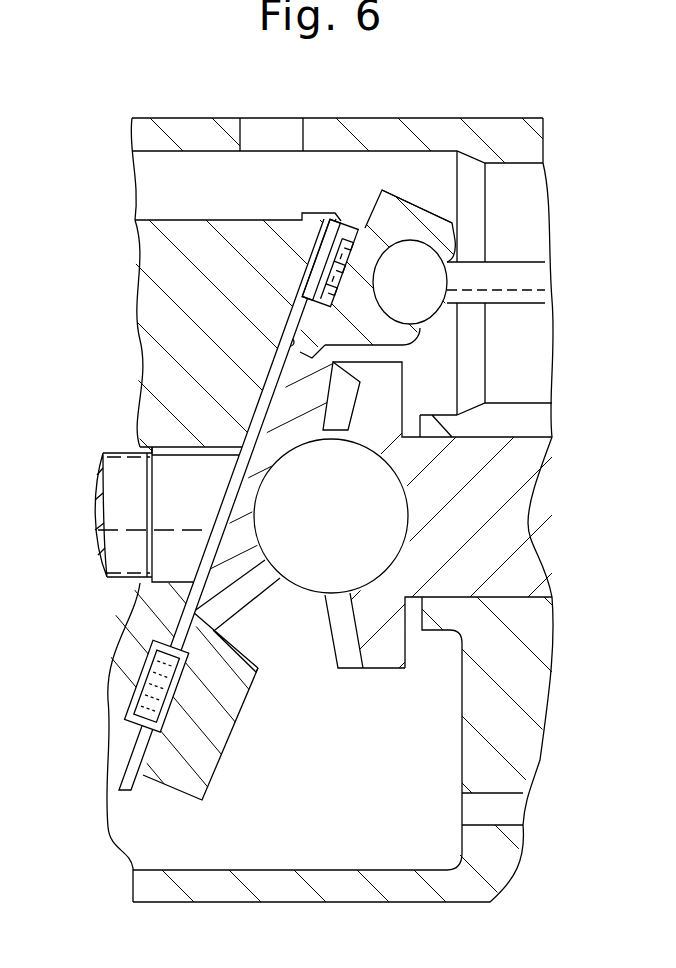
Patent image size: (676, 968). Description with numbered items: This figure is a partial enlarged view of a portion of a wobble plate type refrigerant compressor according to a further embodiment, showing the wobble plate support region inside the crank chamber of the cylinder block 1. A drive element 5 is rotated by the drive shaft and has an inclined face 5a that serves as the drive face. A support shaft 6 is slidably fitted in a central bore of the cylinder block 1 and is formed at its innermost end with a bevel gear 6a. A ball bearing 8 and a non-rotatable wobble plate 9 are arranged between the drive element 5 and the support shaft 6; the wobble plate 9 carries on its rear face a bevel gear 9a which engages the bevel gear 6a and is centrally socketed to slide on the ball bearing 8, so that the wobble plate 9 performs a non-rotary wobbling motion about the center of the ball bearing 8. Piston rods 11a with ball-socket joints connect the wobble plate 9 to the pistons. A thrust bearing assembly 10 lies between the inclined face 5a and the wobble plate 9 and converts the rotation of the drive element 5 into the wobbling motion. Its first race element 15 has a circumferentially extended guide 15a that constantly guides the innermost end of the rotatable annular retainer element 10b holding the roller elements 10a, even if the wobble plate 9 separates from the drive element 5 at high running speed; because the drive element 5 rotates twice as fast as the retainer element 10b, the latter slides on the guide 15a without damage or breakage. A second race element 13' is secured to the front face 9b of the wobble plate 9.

The cylinder block 1 is at (511, 118).
The drive element 5 is at (184, 228).
The inclined face 5a is at (288, 345).
The support shaft 6 is at (518, 520).
The bevel gear 6a is at (354, 662).
The ball bearing 8 is at (312, 578).
The wobble plate 9 is at (240, 723).
The bevel gear 9a is at (262, 636).
The front face 9b is at (365, 228).
The thrust bearing assembly 10 is at (138, 764).
The roller elements 10a is at (374, 264).
The annular retainer element 10b is at (345, 226).
The piston rods 11a is at (511, 300).
The second race element 13' is at (319, 439).
The first race element 15 is at (312, 248).
The circumferentially extended guide 15a is at (305, 291).